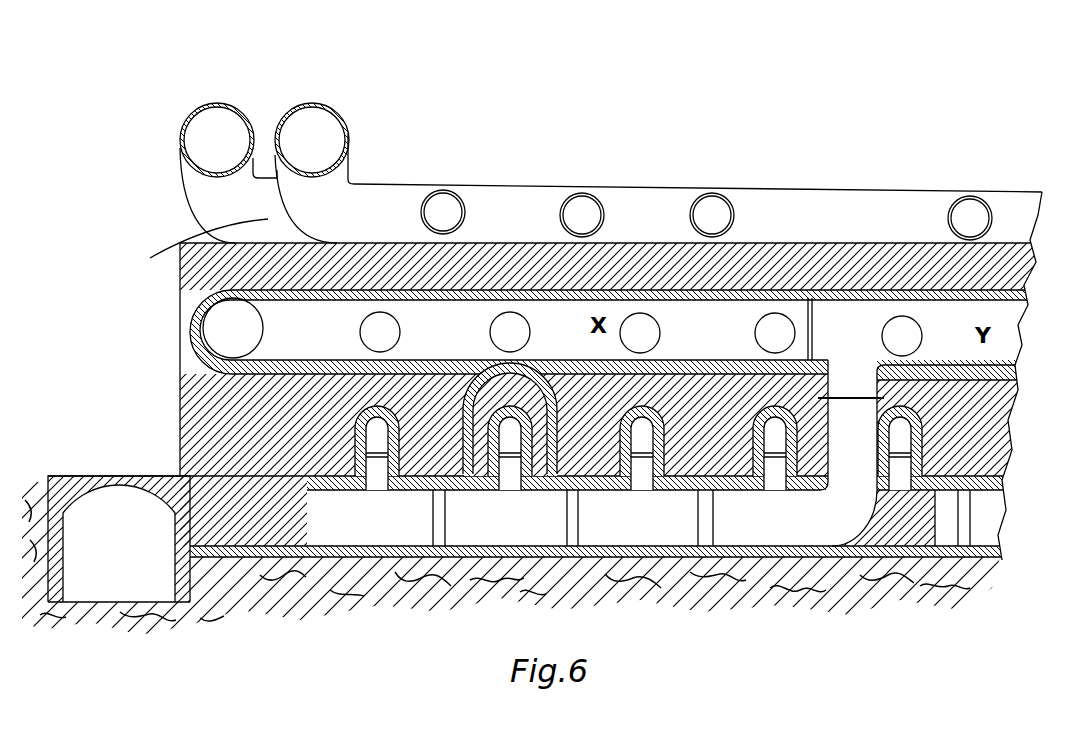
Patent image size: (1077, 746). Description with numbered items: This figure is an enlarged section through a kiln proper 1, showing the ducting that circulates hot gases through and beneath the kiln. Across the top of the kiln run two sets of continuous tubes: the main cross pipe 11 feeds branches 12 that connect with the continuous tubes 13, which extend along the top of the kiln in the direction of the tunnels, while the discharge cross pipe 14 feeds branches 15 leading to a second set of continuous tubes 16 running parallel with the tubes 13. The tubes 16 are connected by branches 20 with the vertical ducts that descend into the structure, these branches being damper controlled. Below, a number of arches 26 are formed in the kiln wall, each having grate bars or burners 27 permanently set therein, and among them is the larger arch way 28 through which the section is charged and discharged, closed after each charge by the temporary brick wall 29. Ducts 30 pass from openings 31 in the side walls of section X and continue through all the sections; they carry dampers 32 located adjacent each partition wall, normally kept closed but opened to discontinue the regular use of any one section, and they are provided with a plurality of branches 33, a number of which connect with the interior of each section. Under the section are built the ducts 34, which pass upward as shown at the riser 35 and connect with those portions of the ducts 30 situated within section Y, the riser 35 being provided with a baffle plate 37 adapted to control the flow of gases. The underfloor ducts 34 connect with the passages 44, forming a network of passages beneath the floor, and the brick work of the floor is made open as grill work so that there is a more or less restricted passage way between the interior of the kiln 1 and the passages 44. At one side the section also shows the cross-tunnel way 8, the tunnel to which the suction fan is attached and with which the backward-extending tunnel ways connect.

The kiln proper 1 is at (488, 394).
The cross-tunnel way 8 is at (120, 488).
The main cross pipe 11 is at (182, 150).
The branches 12 is at (200, 200).
The continuous tubes 13 is at (195, 247).
The cross pipe 14 is at (331, 134).
The branches 15 is at (331, 188).
The continuous tubes 16 is at (388, 198).
The branches 20 is at (466, 192).
The arches 26 is at (378, 420).
The grate bars or burners 27 is at (381, 462).
The arch way 28 is at (487, 372).
The temporary brick wall 29 is at (520, 378).
The ducts 30 is at (545, 303).
The openings 31 is at (203, 325).
The dampers 32 is at (813, 334).
The branches 33 is at (418, 326).
The ducts 34 is at (778, 548).
The riser 35 is at (838, 470).
The baffle plate 37 is at (855, 397).
The passages 44 is at (573, 548).